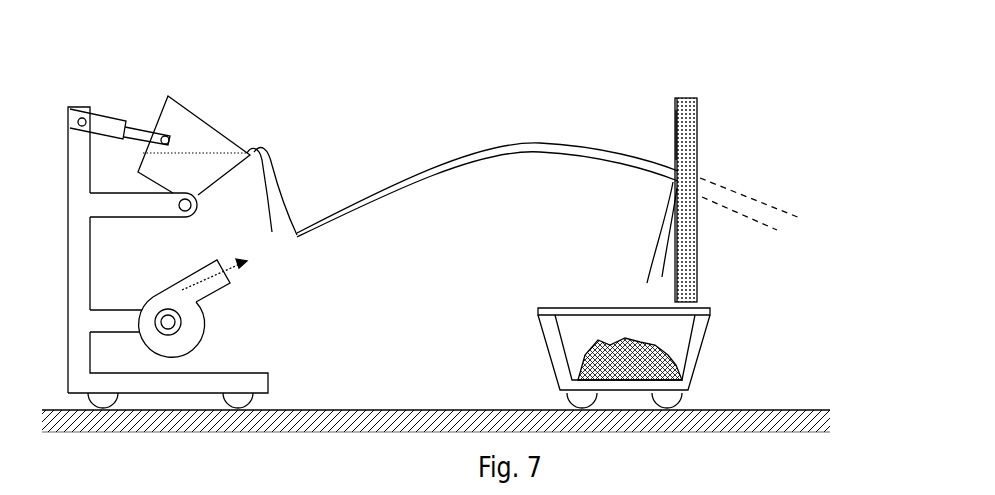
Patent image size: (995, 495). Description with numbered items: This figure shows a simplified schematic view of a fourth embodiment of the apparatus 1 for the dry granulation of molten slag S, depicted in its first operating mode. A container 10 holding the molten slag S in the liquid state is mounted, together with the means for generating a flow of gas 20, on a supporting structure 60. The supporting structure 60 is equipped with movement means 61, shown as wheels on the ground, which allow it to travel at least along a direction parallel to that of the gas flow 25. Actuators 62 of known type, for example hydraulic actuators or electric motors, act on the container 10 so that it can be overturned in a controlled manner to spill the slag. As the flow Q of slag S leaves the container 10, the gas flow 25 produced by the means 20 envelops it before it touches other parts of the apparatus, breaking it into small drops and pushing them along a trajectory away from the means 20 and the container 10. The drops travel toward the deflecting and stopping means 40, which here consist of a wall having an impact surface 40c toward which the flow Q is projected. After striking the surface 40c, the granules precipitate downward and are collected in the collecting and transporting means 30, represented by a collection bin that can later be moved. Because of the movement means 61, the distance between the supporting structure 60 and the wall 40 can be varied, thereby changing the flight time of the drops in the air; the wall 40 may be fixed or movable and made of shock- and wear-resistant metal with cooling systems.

The apparatus for the dry granulation of molten slag 1 is at (828, 70).
The container 10 is at (207, 123).
The means for generating a flow of gas 20 is at (208, 307).
The flow of gas 25 is at (200, 277).
The means for collecting and transporting the cooled slag granules 30 is at (552, 356).
The means for deflecting and/or stopping 40 is at (683, 102).
The impact surface 40c is at (674, 135).
The supporting structure 60 is at (268, 373).
The means which allow it to move 61 is at (258, 404).
The actuators 62 is at (98, 113).
The flow of slag Q is at (273, 162).
The molten slag S is at (143, 191).